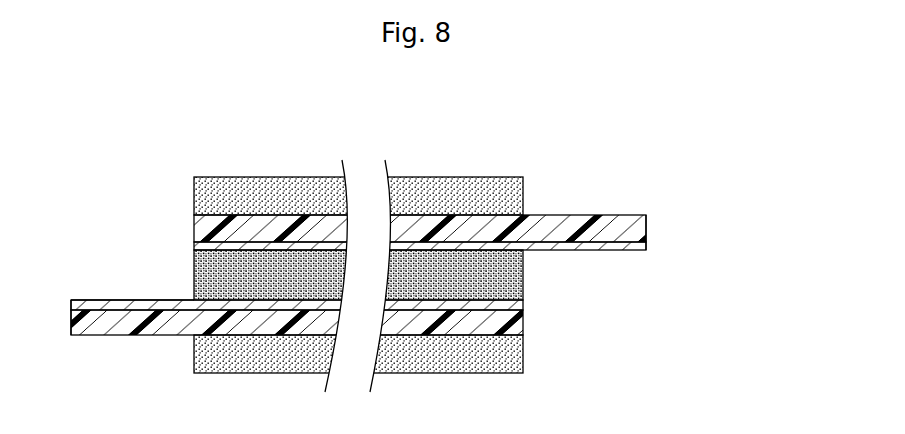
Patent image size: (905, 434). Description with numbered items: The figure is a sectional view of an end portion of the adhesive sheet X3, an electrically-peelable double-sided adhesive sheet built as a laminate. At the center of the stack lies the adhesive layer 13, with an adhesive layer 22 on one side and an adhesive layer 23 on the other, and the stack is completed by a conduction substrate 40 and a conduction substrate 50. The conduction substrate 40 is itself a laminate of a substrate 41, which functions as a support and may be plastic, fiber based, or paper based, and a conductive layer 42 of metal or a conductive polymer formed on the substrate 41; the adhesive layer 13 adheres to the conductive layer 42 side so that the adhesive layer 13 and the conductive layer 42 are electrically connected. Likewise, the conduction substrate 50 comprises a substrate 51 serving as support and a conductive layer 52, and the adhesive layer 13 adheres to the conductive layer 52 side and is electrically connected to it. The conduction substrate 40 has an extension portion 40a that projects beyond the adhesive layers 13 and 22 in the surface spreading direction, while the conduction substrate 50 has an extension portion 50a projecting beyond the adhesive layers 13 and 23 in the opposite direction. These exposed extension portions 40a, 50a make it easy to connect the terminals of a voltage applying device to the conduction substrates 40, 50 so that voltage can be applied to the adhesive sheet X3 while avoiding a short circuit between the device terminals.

The adhesive sheet X3 is at (270, 162).
The adhesive layer 23 is at (194, 194).
The adhesive layer 13 is at (194, 272).
The adhesive layer 22 is at (194, 353).
The conduction substrate 40 is at (348, 310).
The extension portion 40a is at (117, 307).
The substrate 41 is at (515, 333).
The conductive layer 42 is at (523, 305).
The conduction substrate 50 is at (476, 243).
The extension portion 50a is at (610, 252).
The substrate 51 is at (647, 220).
The conductive layer 52 is at (647, 247).